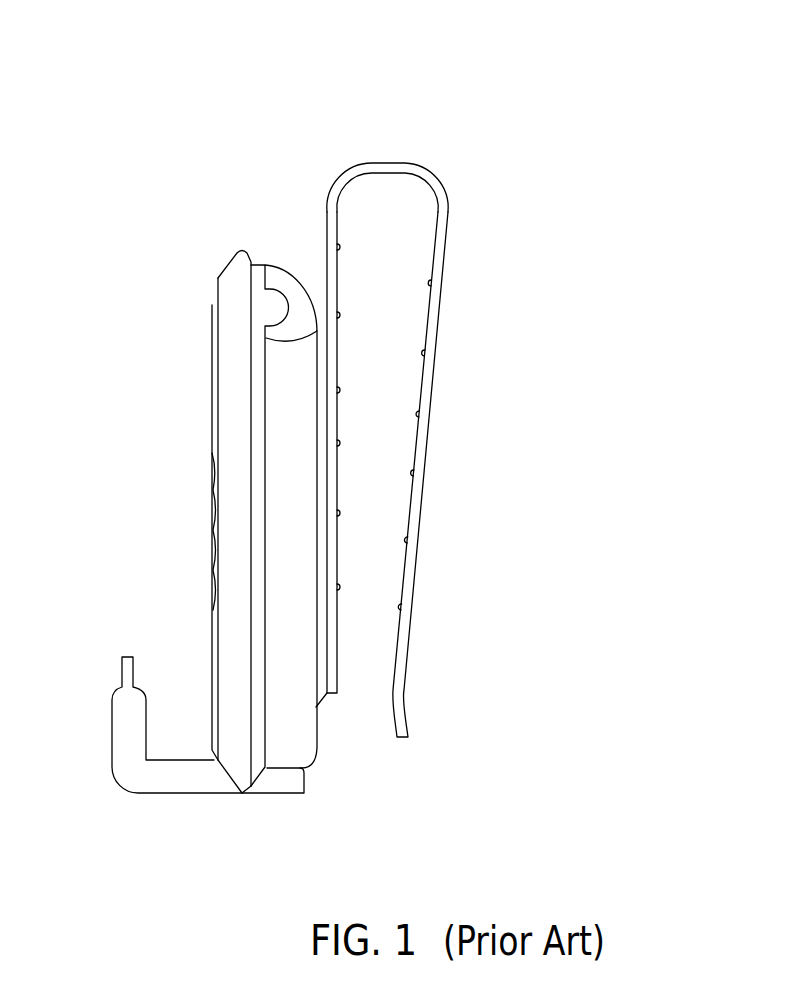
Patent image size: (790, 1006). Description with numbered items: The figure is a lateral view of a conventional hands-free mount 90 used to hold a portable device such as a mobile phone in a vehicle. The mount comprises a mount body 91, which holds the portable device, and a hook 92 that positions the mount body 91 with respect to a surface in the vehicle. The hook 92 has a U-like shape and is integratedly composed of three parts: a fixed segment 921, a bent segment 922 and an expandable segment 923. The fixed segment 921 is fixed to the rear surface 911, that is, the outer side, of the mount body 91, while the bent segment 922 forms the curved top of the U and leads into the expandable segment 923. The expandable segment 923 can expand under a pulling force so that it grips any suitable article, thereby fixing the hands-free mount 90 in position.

The hands-free mount 90 is at (237, 198).
The mount body 91 is at (250, 412).
The rear surface 911 is at (266, 338).
The hook 92 is at (445, 265).
The fixed segment 921 is at (337, 373).
The bent segment 922 is at (397, 172).
The expandable segment 923 is at (435, 355).